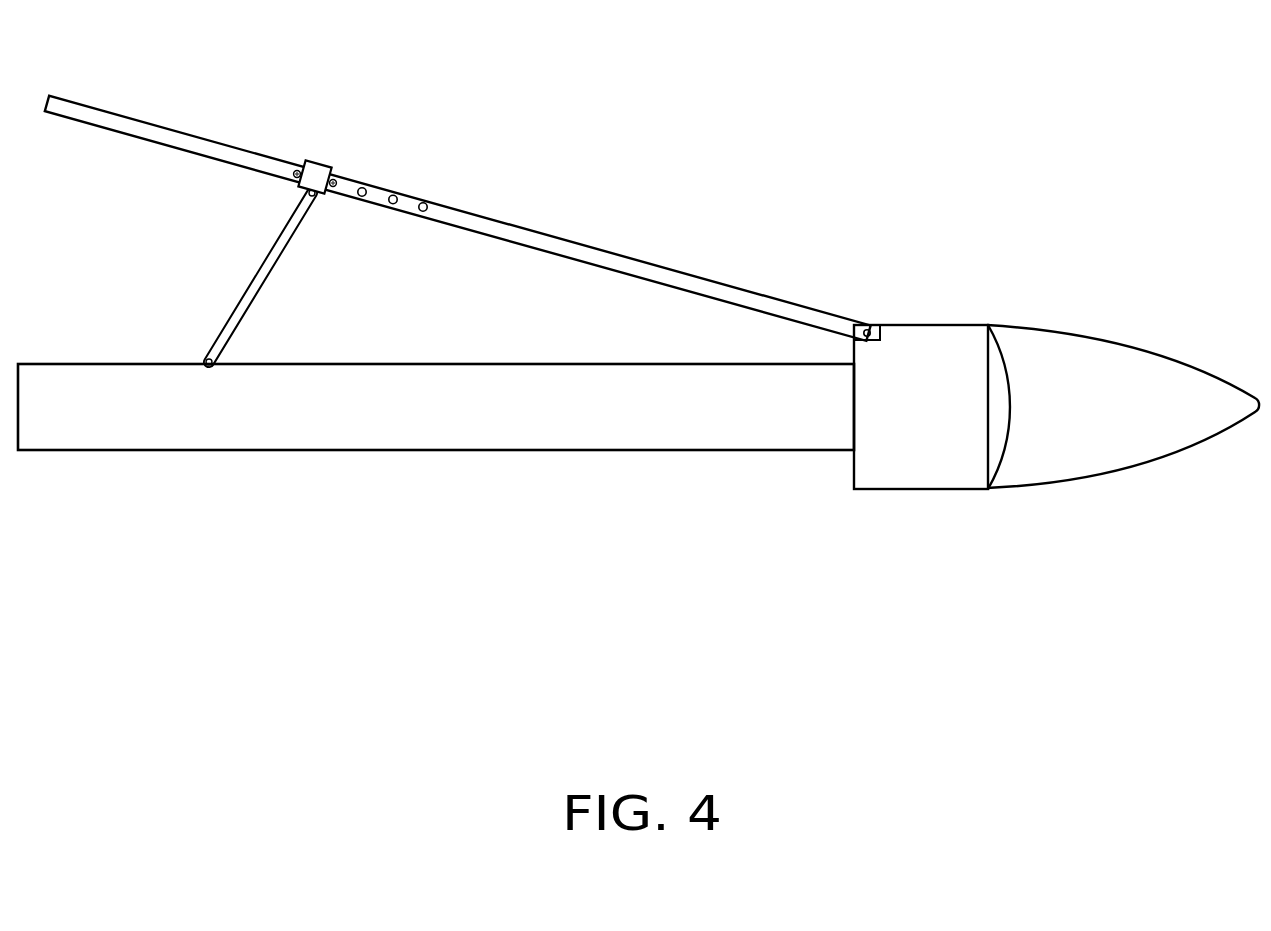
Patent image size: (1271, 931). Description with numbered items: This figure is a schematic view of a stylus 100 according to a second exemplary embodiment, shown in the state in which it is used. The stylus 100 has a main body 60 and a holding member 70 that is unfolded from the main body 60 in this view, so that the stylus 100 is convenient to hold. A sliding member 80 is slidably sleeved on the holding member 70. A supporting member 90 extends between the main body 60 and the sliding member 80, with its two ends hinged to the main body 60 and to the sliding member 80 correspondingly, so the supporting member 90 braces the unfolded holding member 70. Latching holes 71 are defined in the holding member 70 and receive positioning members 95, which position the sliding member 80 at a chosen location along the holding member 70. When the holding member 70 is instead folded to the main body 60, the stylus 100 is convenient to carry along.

The stylus 100 is at (687, 73).
The main body 60 is at (743, 405).
The holding member 70 is at (168, 138).
The latching holes 71 is at (426, 204).
The sliding member 80 is at (317, 177).
The supporting member 90 is at (265, 271).
The positioning members 95 is at (337, 178).